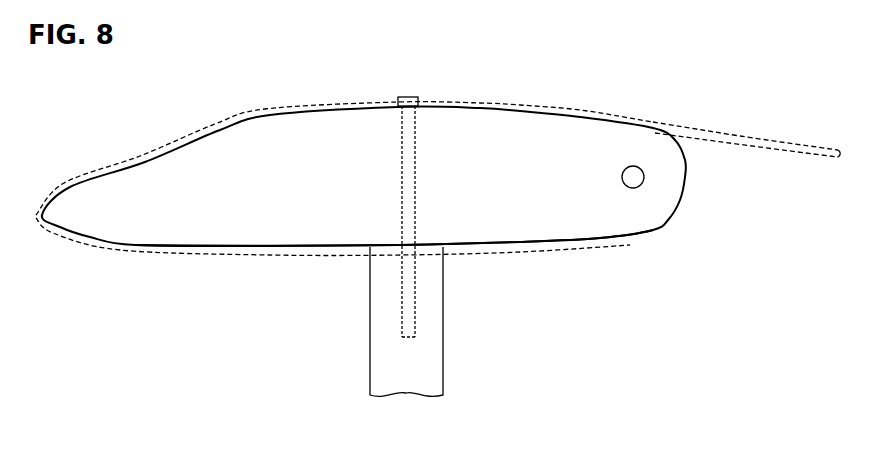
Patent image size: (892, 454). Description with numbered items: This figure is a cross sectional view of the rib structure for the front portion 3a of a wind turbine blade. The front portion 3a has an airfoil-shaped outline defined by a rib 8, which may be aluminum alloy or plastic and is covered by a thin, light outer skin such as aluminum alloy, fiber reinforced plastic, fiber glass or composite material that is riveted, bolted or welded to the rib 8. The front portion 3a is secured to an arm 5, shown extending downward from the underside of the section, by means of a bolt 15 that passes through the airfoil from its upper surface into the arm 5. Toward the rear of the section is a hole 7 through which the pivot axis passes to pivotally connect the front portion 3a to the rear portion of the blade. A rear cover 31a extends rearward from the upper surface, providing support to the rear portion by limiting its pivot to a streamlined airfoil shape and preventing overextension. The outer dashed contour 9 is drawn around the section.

The front portion 3a is at (192, 282).
The outer skin 9 is at (556, 106).
The rear cover 31a is at (766, 130).
The hole 7 is at (621, 177).
The bolt 15 is at (398, 147).
The arm 5 is at (444, 335).
The rib 8 is at (537, 222).